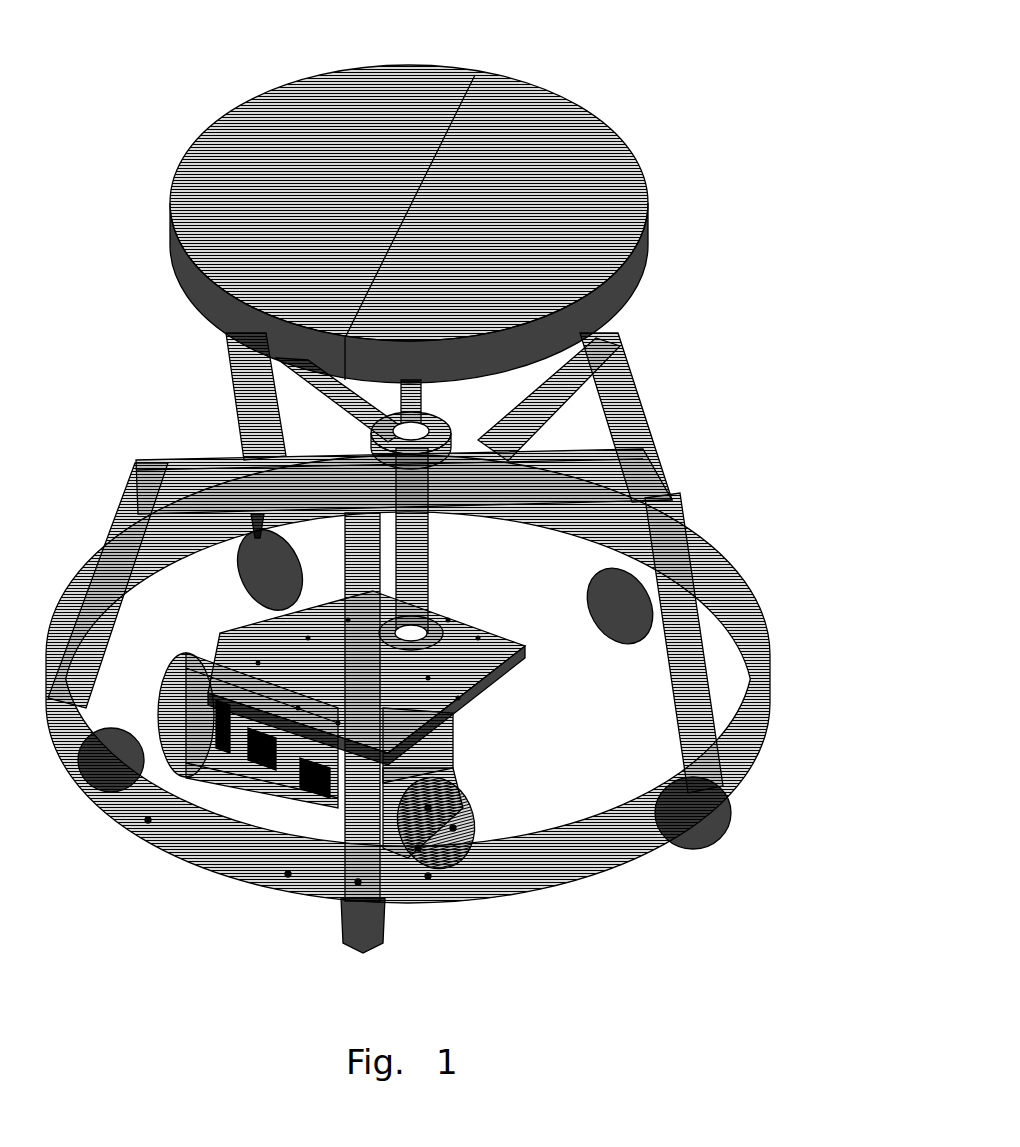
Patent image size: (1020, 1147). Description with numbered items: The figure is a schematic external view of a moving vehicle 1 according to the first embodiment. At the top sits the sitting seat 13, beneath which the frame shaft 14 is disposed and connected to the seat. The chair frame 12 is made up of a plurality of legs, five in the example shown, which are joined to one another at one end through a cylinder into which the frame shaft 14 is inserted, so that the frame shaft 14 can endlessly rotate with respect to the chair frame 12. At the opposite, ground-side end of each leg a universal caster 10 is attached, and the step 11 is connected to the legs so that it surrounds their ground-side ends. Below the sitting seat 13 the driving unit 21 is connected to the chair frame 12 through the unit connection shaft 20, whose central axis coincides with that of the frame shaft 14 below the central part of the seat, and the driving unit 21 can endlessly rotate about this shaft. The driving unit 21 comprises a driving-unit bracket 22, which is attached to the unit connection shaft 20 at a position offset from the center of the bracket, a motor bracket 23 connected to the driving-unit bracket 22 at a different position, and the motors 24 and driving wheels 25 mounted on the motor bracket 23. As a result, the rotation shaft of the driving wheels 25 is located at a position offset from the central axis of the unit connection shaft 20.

The moving vehicle 1 is at (106, 42).
The universal caster 10 is at (663, 850).
The step 11 is at (742, 572).
The chair frame 12 is at (630, 386).
The sitting seat 13 is at (590, 100).
The frame shaft 14 is at (262, 420).
The unit connection shaft 20 is at (428, 538).
The driving unit 21 is at (497, 612).
The driving-unit bracket 22 is at (500, 662).
The motor bracket 23 is at (447, 733).
The motor 24 is at (278, 758).
The driving wheel 25 is at (453, 763).